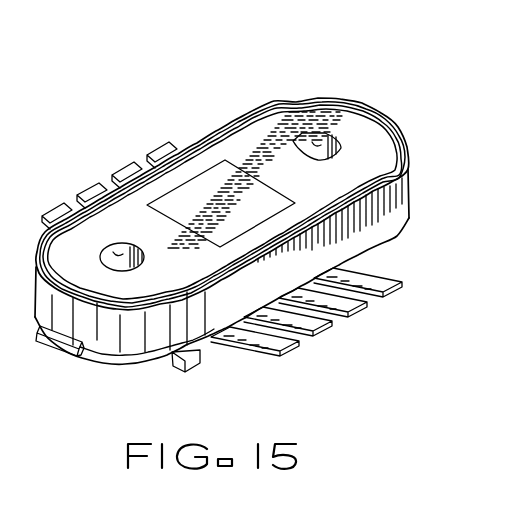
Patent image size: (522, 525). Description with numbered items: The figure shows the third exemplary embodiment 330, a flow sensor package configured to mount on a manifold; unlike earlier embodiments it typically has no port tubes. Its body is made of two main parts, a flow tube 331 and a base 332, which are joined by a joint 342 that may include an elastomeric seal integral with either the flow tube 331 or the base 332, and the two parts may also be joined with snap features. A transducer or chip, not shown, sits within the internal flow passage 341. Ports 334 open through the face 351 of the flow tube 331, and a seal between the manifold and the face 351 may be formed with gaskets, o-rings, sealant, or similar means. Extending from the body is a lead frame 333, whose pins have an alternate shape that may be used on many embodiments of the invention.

The third exemplary embodiment 330 is at (141, 88).
The flow tube 331 is at (125, 220).
The base 332 is at (160, 362).
The lead frame 333 is at (320, 335).
The ports 334 is at (340, 147).
The internal flow passage 341 is at (112, 248).
The joint 342 is at (266, 70).
The face 351 is at (250, 141).